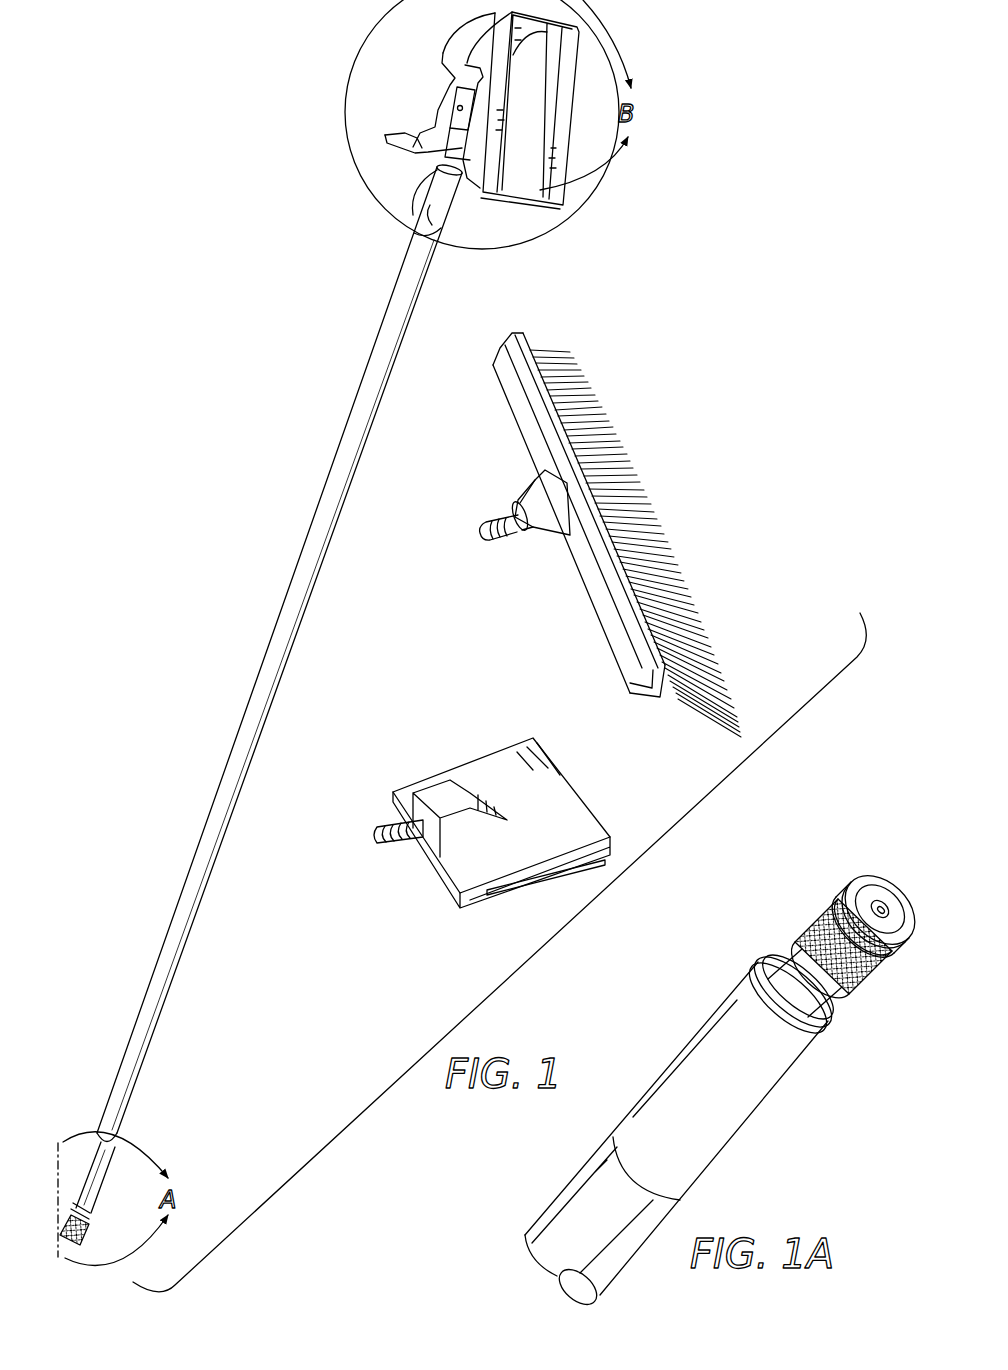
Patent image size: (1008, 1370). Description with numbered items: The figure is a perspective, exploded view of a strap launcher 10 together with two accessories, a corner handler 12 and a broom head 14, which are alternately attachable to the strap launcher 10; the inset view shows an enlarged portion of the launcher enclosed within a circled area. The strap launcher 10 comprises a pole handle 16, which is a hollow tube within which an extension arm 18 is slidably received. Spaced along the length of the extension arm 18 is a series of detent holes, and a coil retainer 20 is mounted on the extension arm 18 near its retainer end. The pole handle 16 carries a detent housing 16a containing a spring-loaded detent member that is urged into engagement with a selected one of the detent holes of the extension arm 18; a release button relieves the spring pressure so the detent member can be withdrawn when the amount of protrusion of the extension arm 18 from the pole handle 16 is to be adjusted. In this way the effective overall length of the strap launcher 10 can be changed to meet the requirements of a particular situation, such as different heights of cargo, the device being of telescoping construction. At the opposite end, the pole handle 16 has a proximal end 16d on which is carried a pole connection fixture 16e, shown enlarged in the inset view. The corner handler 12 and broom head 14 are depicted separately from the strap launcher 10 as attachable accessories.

In FIG. 1, the strap launcher 10 is at (283, 573).
In FIG. 1, the corner handler 12 is at (434, 892).
In FIG. 1, the broom head 14 is at (568, 576).
In FIG. 1, the pole handle 16 is at (235, 790).
In FIG. 1, the detent housing 16a is at (440, 200).
In FIG. 1, the proximal end 16d is at (103, 1167).
In FIG. 1A, the proximal end 16d is at (718, 1093).
In FIG. 1, the pole connection fixture 16e is at (90, 1235).
In FIG. 1A, the pole connection fixture 16e is at (867, 987).
In FIG. 1, the extension arm 18 is at (452, 147).
In FIG. 1, the coil retainer 20 is at (452, 40).